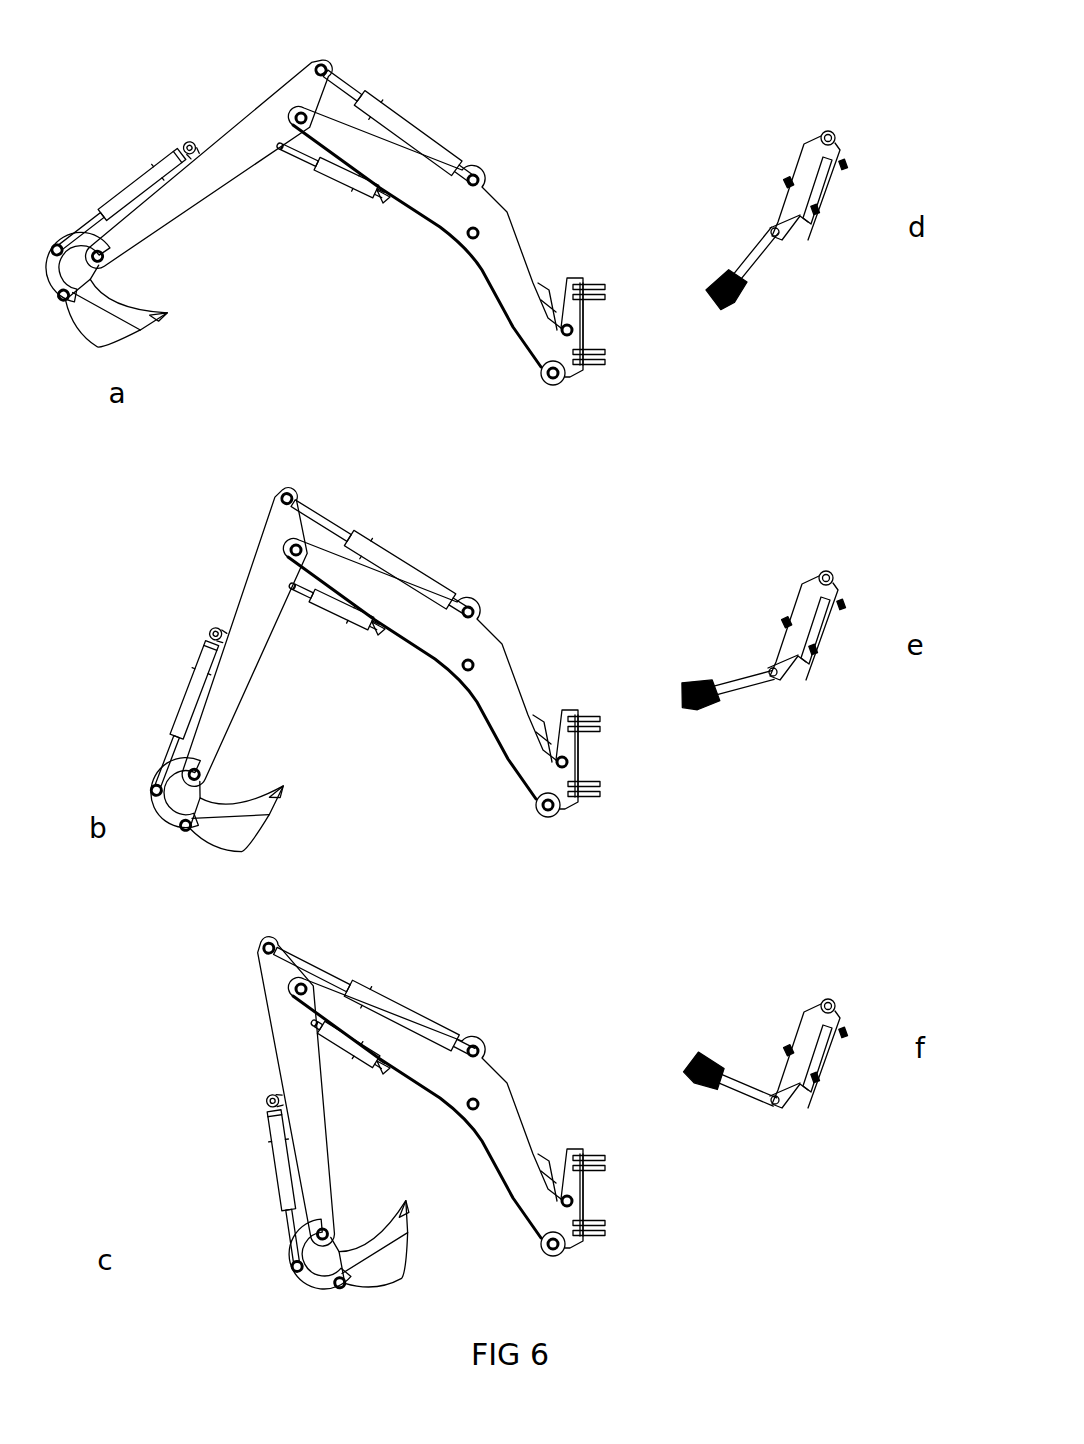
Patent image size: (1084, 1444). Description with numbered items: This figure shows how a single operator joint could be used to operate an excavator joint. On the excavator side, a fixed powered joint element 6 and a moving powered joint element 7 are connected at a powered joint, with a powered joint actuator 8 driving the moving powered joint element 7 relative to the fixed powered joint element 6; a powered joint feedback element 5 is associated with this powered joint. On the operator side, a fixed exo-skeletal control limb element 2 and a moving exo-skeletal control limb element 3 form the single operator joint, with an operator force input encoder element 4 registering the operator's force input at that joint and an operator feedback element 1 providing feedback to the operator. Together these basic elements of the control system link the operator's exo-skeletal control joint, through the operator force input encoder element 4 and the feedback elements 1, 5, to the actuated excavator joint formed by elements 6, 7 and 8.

The operator feedback element 1 is at (825, 187).
The fixed exo-skeletal control limb element 2 is at (782, 207).
The moving exo-skeletal control limb element 3 is at (757, 258).
The operator force input encoder element 4 is at (838, 115).
The powered joint feedback element 5 is at (340, 178).
The fixed powered joint element 6 is at (448, 212).
The moving powered joint element 7 is at (227, 138).
The powered joint actuator 8 is at (410, 133).